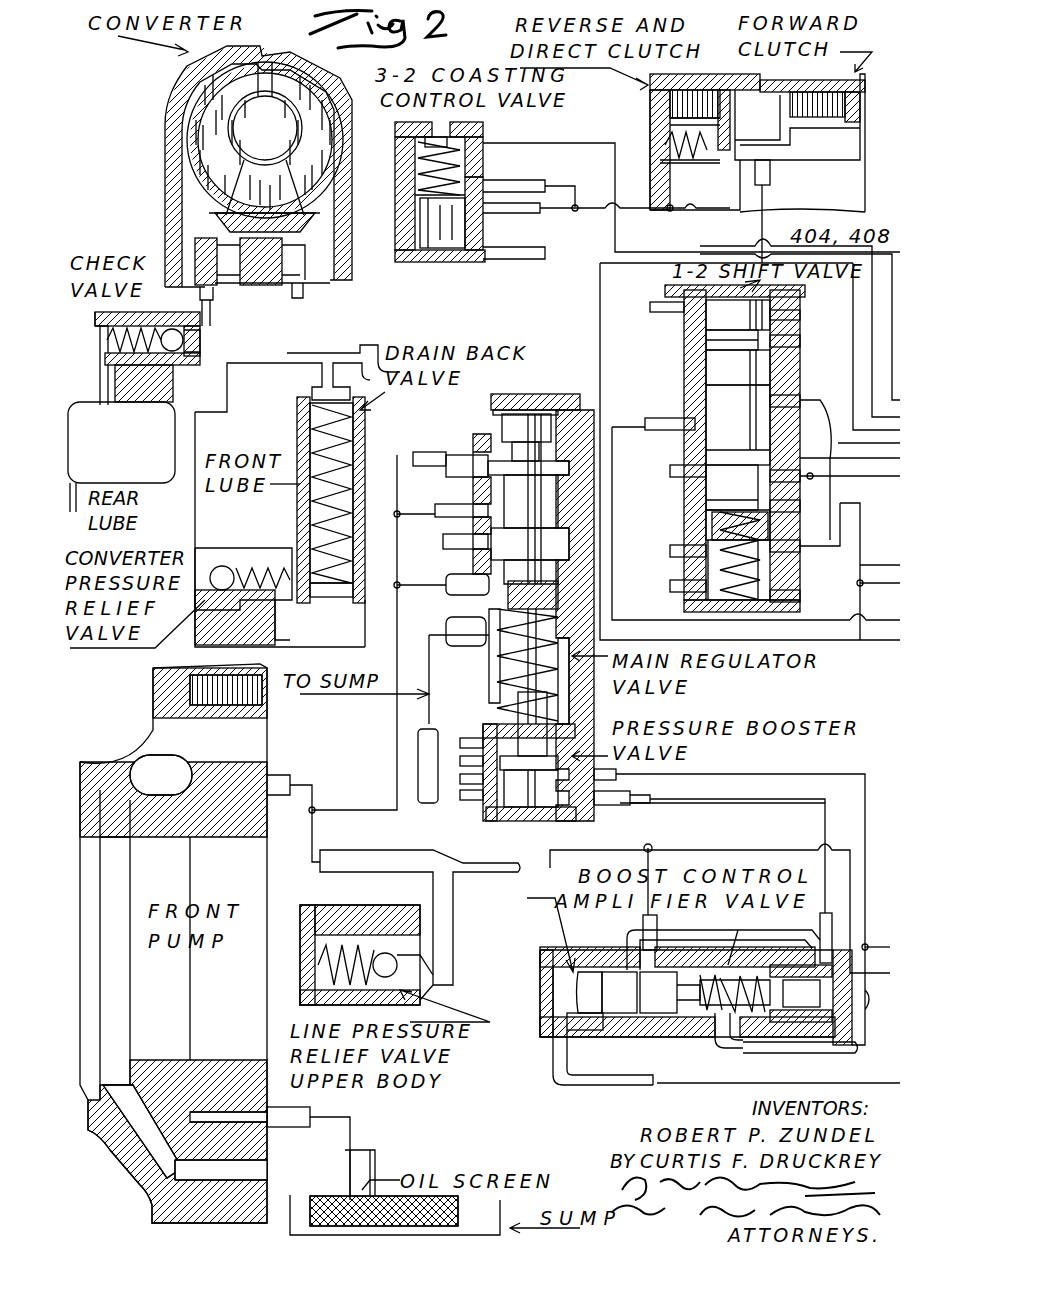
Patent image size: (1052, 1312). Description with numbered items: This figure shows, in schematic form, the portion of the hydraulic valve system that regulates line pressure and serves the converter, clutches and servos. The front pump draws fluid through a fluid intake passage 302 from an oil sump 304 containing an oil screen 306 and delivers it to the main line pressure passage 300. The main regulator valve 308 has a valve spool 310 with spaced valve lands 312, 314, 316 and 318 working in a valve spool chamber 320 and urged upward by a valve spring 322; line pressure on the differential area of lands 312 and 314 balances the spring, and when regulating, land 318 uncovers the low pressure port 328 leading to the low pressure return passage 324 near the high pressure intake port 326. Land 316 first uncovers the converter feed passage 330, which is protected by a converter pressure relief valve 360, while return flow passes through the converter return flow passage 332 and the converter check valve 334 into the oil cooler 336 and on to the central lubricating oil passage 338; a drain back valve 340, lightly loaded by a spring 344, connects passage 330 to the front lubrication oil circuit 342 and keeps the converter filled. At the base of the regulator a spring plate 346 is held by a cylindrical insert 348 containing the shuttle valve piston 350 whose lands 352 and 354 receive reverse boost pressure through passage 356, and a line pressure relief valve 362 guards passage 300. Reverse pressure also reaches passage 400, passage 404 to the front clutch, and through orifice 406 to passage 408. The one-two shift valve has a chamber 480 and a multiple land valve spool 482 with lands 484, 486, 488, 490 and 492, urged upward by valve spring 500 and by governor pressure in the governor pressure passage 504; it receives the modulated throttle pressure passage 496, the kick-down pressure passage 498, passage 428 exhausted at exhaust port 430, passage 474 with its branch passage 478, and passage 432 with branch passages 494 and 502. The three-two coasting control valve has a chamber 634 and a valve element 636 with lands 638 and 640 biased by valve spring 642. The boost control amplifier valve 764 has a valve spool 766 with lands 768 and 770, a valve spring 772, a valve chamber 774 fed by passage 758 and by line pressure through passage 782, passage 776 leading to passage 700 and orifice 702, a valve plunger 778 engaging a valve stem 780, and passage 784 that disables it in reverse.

The main line pressure passage 300 is at (818, 840).
The fluid intake passage 302 is at (370, 1135).
The oil sump 304 is at (480, 1225).
The oil screen 306 is at (340, 1195).
The main regulator valve 308 is at (562, 393).
The valve spool 310 is at (535, 510).
The valve land 312 is at (500, 422).
The valve land 314 is at (490, 455).
The valve land 316 is at (490, 545).
The valve land 318 is at (480, 620).
The valve spool chamber 320 is at (480, 478).
The valve spring 322 is at (495, 728).
The low pressure return passage 324 is at (460, 795).
The high pressure intake port 326 is at (478, 590).
The low pressure port 328 is at (490, 665).
The converter feed passage 330 is at (345, 636).
The converter return flow passage 332 is at (212, 300).
The converter check valve 334 is at (190, 338).
The oil cooler 336 is at (172, 400).
The central lubricating oil passage 338 is at (121, 446).
The drain back valve 340 is at (300, 390).
The front lubrication oil circuit 342 is at (362, 448).
The spring 344 is at (305, 445).
The spring plate 346 is at (452, 740).
The cylindrical insert 348 is at (460, 780).
The shuttle valve piston 350 is at (460, 770).
The valve land 352 is at (460, 755).
The valve land 354 is at (480, 806).
The passage 356 is at (620, 780).
The converter pressure relief valve 360 is at (230, 565).
The line pressure relief valve 362 is at (360, 945).
The passage 400 is at (650, 415).
The passage 404 is at (585, 215).
The orifice 406 is at (525, 215).
The passage 408 is at (580, 150).
The passage 428 is at (805, 508).
The exhaust port 430 is at (685, 478).
The passage 432 is at (785, 400).
The passage 474 is at (860, 583).
The branch passage 478 is at (755, 175).
The 1-2 shift valve chamber 480 is at (695, 352).
The multiple land valve spool 482 is at (695, 330).
The valve land 484 is at (690, 300).
The valve land 486 is at (700, 378).
The valve land 488 is at (705, 458).
The valve land 490 is at (705, 510).
The valve land 492 is at (705, 552).
The branch passage 494 is at (815, 478).
The modulated throttle pressure passage 496 is at (780, 342).
The kick-down pressure passage 498 is at (785, 375).
The valve spring 500 is at (705, 575).
The branch passage 502 is at (800, 595).
The governor pressure passage 504 is at (515, 255).
The valve chamber 634 is at (470, 162).
The valve element 636 is at (418, 158).
The valve land 638 is at (418, 196).
The valve land 640 is at (428, 232).
The valve spring 642 is at (493, 150).
The passage 700 is at (700, 822).
The orifice 702 is at (625, 800).
The passage 758 is at (605, 1092).
The boost control amplifier valve 764 is at (678, 968).
The valve spool 766 is at (615, 990).
The valve land 768 is at (560, 960).
The valve land 770 is at (680, 1013).
The valve spring 772 is at (708, 936).
The valve chamber 774 is at (615, 1030).
The passage 776 is at (807, 935).
The valve plunger 778 is at (830, 1022).
The valve stem 780 is at (800, 1000).
The passage 782 is at (648, 848).
The passage 784 is at (730, 1040).